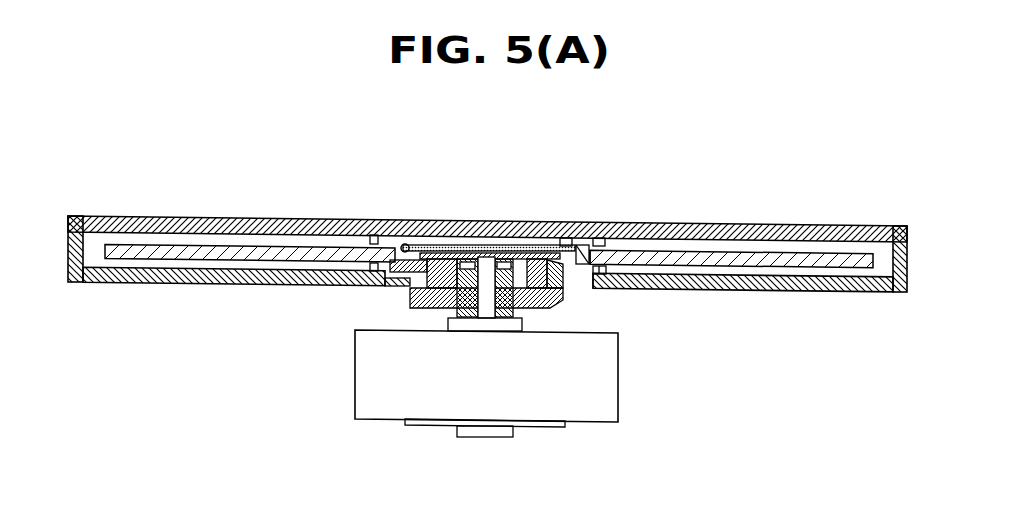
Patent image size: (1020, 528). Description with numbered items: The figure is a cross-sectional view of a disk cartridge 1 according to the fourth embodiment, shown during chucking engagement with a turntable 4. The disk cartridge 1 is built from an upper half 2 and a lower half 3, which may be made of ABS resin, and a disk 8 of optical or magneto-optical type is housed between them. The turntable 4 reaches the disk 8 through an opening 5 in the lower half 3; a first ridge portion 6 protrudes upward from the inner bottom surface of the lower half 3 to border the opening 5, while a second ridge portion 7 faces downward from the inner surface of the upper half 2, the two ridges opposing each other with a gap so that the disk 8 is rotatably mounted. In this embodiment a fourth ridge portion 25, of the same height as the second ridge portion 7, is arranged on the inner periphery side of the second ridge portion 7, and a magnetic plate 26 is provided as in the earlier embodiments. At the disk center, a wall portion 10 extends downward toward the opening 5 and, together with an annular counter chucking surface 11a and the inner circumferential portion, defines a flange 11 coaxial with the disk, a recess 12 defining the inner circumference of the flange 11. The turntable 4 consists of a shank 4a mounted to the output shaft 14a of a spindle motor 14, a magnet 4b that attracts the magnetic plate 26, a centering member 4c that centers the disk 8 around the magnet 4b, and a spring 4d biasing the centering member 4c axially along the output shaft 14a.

The disk cartridge 1 is at (911, 247).
The upper half 2 is at (862, 228).
The lower half 3 is at (888, 293).
The turntable 4 is at (378, 284).
The shank 4a is at (500, 312).
The magnet 4b is at (468, 254).
The centering member 4c is at (394, 288).
The spring 4d is at (438, 302).
The opening 5 is at (599, 278).
The first ridge portion 6 is at (608, 288).
The second ridge portion 7 is at (602, 240).
The disk 8 is at (765, 250).
The wall portion 10 is at (609, 254).
The flange 11 is at (586, 246).
The counter chucking surface 11a is at (549, 262).
The recess 12 is at (406, 244).
The spindle motor 14 is at (607, 395).
The output shaft 14a is at (487, 312).
The fourth ridge portion 25 is at (566, 238).
The magnetic plate 26 is at (443, 245).